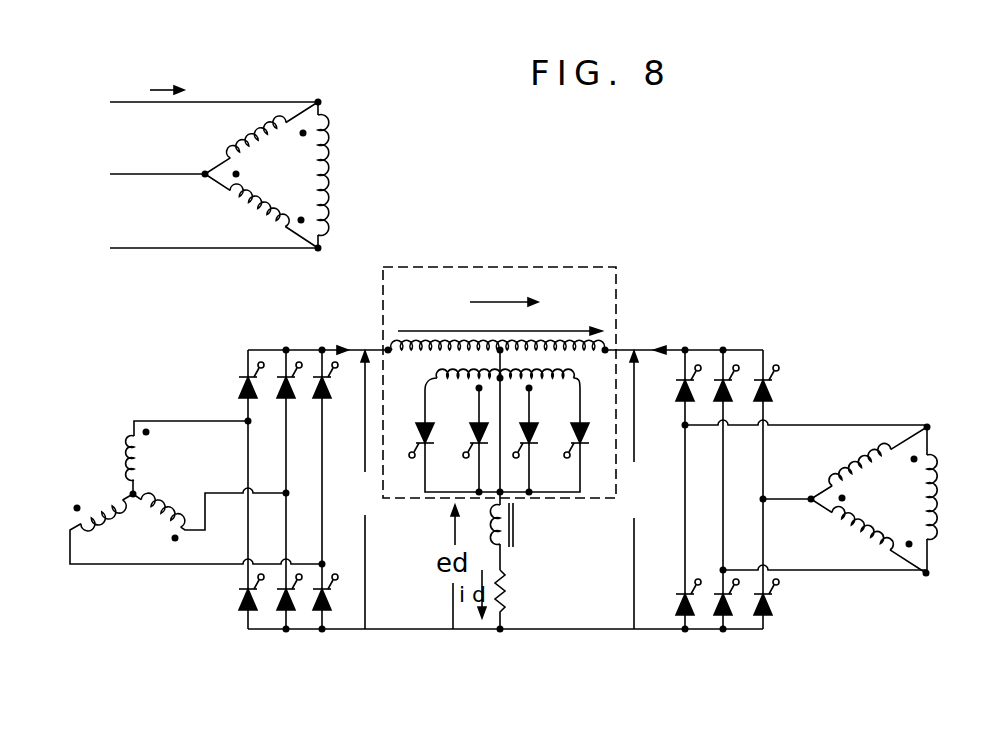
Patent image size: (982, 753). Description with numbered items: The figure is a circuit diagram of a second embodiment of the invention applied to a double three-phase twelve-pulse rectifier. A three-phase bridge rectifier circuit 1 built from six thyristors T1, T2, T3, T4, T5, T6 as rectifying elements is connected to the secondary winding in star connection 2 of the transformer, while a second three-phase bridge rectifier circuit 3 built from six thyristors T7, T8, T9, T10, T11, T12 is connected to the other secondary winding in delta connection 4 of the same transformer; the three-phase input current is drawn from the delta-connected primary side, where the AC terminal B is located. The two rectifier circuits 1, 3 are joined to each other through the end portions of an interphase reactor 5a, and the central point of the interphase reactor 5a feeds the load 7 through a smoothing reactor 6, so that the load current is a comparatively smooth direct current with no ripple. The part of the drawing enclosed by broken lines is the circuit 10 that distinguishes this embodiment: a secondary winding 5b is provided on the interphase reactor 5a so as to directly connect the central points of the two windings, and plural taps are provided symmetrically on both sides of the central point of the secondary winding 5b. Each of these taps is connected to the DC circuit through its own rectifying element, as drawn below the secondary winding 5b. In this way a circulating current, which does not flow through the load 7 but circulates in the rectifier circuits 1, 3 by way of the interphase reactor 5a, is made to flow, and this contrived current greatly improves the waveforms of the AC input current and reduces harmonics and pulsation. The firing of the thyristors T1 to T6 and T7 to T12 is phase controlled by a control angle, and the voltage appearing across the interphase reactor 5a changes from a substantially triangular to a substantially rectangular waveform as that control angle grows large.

The terminal B is at (334, 139).
The three-phase bridge rectifier circuit 1 is at (480, 474).
The secondary winding in star connection 2 is at (116, 478).
The three-phase bridge rectifier circuit 3 is at (711, 480).
The secondary winding in delta connection 4 is at (943, 470).
The interphase reactor 5a is at (556, 348).
The secondary winding 5b is at (455, 378).
The smoothing reactor 6 is at (516, 530).
The load 7 is at (509, 601).
The circuit 10 is at (564, 259).
The thyristor T1 is at (259, 394).
The thyristor T2 is at (297, 394).
The thyristor T3 is at (333, 394).
The thyristor T4 is at (230, 602).
The thyristor T5 is at (288, 613).
The thyristor T6 is at (325, 613).
The thyristor T7 is at (695, 395).
The thyristor T8 is at (734, 395).
The thyristor T9 is at (773, 395).
The thyristor T10 is at (673, 604).
The thyristor T11 is at (726, 616).
The thyristor T12 is at (766, 615).